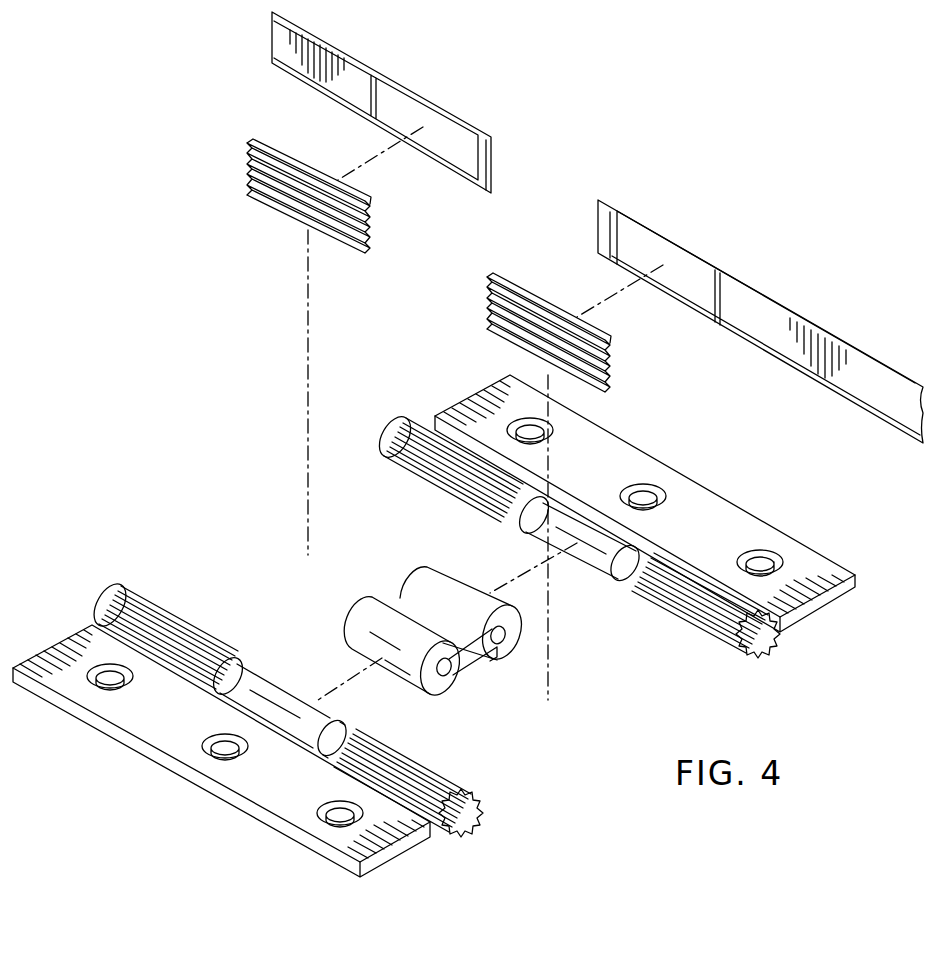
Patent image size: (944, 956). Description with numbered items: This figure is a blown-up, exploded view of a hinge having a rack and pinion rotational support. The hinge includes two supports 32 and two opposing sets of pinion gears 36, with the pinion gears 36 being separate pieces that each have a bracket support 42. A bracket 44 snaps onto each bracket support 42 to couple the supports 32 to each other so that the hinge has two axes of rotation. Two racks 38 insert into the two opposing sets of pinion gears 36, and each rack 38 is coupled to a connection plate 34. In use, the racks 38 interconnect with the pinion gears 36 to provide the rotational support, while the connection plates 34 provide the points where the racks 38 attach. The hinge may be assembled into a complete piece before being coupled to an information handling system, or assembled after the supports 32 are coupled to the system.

The support 32 is at (187, 777).
The connection plate 34 is at (410, 90).
The pinion gear 36 is at (170, 618).
The rack 38 is at (280, 212).
The bracket support 42 is at (248, 657).
The bracket 44 is at (392, 598).